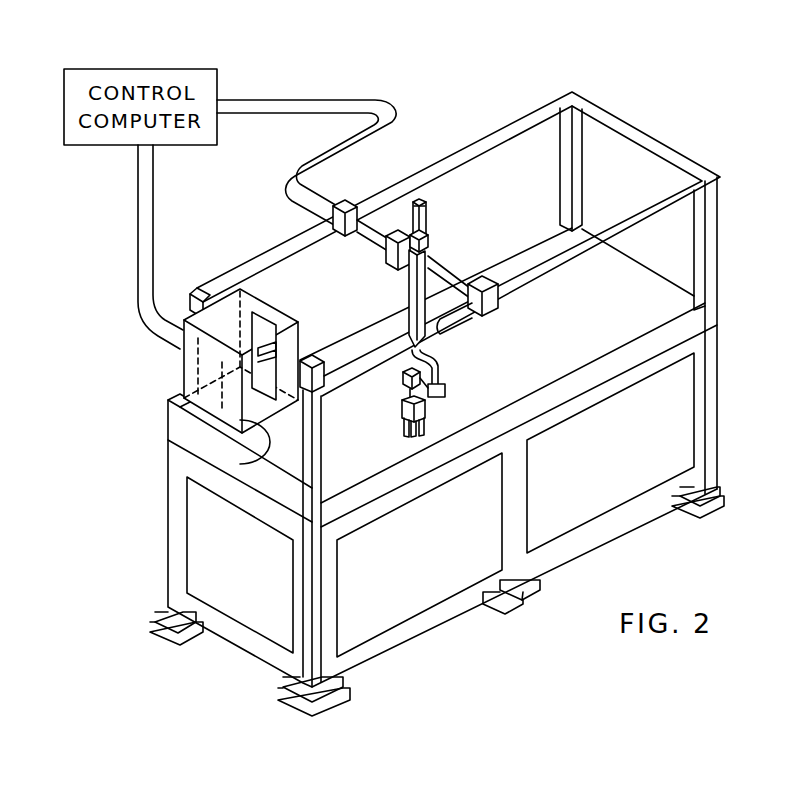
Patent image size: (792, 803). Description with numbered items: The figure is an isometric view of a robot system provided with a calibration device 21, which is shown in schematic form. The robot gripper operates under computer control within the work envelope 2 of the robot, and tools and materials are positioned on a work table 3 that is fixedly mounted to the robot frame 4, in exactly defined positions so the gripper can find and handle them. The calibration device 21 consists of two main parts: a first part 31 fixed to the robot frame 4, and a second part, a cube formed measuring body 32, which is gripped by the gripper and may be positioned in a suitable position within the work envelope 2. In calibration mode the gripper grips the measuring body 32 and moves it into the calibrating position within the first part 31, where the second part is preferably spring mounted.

The work envelope 2 is at (660, 150).
The work table 3 is at (673, 291).
The robot frame 4 is at (707, 452).
The calibration device 21 is at (178, 358).
The first part 31 is at (267, 437).
The cube formed measuring body 32 is at (258, 310).